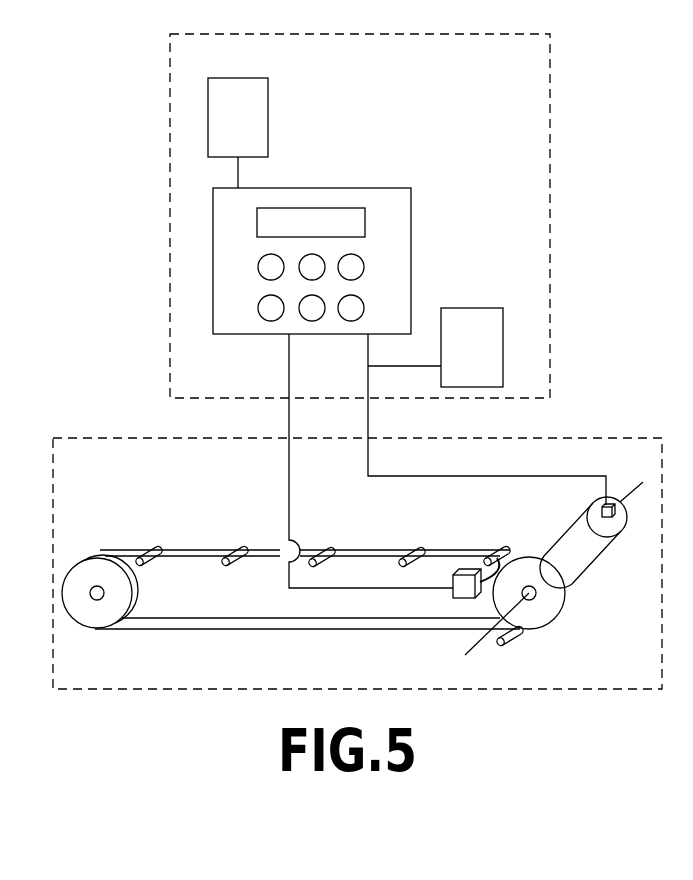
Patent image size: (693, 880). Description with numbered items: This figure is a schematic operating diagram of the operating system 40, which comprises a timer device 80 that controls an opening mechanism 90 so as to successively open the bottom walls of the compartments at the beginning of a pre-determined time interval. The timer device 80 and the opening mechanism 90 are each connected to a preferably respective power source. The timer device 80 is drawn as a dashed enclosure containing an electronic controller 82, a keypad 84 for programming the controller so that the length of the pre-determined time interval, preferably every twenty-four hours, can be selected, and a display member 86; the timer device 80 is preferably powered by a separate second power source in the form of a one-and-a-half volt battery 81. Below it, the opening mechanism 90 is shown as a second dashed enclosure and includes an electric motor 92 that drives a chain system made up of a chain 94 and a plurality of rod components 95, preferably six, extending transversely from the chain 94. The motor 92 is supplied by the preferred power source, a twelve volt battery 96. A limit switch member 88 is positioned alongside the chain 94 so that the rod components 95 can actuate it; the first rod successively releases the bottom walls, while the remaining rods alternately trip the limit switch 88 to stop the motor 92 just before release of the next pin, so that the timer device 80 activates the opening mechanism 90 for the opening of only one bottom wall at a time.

The operating system 40 is at (580, 147).
The timer device 80 is at (550, 224).
The 1.5 VDC battery 81 is at (268, 99).
The electronic controller 82 is at (398, 224).
The keypad 84 is at (357, 266).
The display member 86 is at (323, 222).
The limit switch member 88 is at (465, 573).
The opening mechanism 90 is at (118, 436).
The electric motor 92 is at (592, 543).
The chain 94 is at (277, 547).
The rod components 95 is at (235, 552).
The 12 VDC battery 96 is at (503, 361).